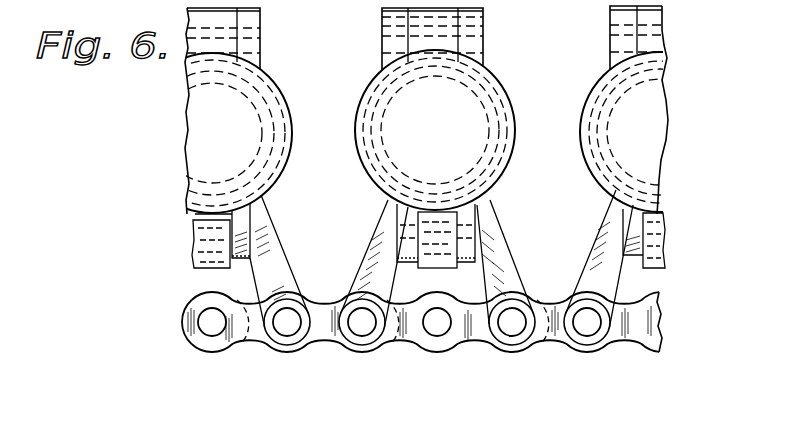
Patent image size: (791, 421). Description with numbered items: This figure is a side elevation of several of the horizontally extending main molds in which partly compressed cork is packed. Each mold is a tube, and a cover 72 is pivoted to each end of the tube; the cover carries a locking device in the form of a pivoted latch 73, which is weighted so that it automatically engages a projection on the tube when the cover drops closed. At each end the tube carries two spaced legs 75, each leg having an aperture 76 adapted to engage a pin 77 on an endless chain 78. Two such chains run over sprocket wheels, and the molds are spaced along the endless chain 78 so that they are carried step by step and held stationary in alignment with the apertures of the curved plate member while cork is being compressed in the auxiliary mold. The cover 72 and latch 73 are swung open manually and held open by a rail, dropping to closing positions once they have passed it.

The cover 72 is at (435, 130).
The pivoted latch 73 is at (438, 266).
The spaced legs 75 is at (365, 262).
The aperture 76 is at (361, 335).
The pin 77 is at (352, 306).
The endless chain 78 is at (322, 338).